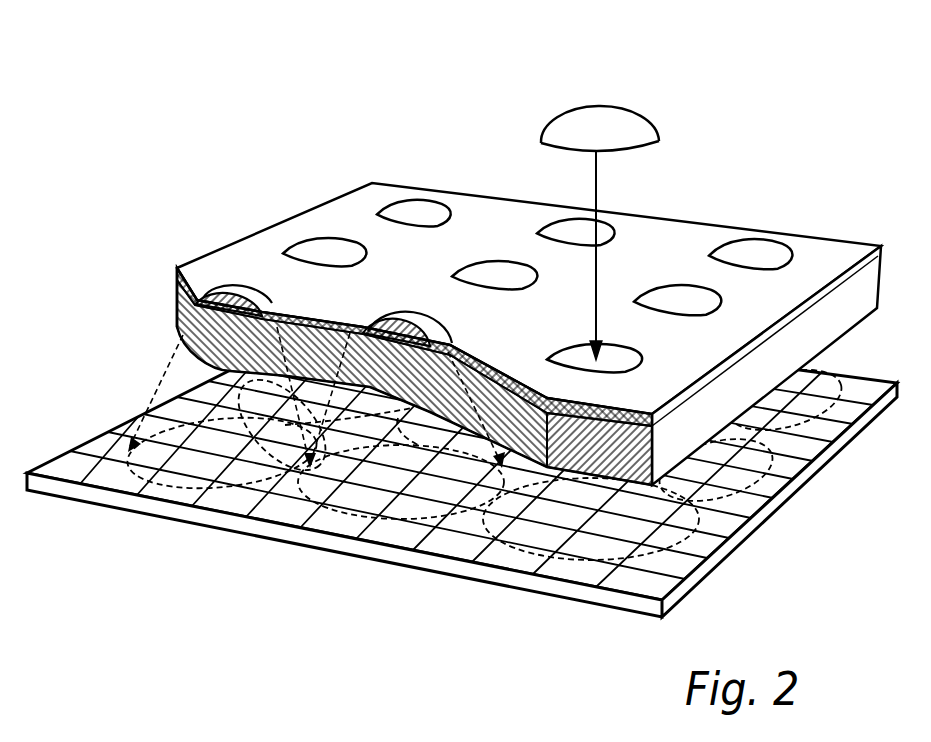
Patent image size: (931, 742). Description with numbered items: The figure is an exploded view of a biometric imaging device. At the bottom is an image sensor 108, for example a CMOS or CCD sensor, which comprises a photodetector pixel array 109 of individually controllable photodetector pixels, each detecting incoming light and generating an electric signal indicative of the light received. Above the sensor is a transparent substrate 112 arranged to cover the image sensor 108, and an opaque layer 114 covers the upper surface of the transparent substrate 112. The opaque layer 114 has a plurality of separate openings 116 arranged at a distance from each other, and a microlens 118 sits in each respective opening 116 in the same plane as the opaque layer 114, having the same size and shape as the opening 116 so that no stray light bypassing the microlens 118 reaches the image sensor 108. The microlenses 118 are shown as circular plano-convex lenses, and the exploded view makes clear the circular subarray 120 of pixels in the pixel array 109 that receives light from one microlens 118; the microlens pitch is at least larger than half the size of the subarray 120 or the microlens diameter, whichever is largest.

The image sensor 108 is at (462, 468).
The photodetector pixel array 109 is at (473, 543).
The transparent substrate 112 is at (177, 308).
The opaque layer 114 is at (193, 268).
The opening 116 is at (615, 362).
The microlens 118 is at (598, 116).
The subarray of pixels 120 is at (261, 484).